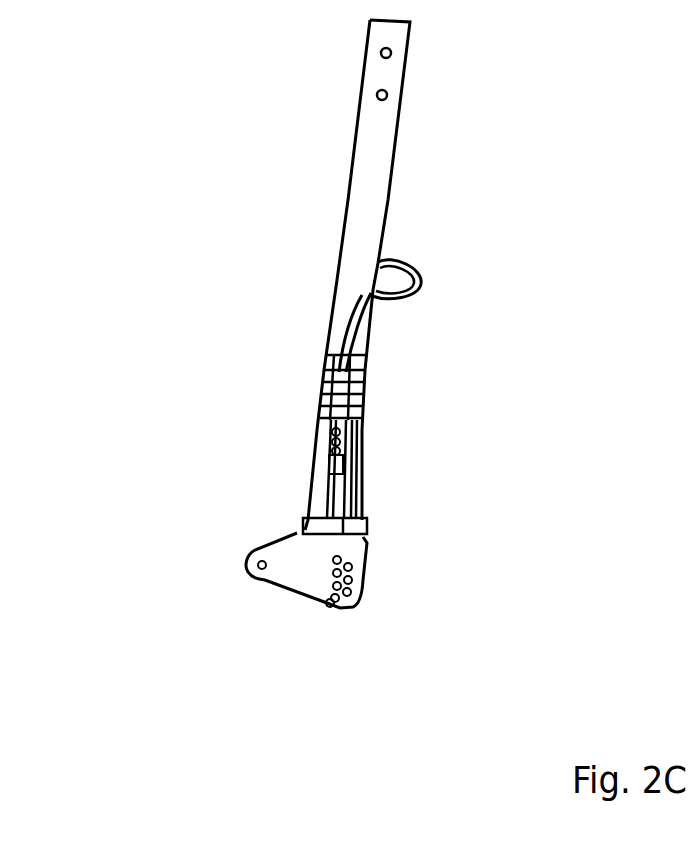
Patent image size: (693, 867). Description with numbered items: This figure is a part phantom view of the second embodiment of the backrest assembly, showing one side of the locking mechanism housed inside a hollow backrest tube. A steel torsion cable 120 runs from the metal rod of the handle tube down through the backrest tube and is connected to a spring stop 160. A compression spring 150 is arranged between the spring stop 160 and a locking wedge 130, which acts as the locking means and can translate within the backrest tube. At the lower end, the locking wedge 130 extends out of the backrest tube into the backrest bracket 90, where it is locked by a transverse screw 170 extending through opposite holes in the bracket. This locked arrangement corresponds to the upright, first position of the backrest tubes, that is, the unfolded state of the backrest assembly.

The backrest bracket 90 is at (300, 570).
The steel torsion cable 120 is at (367, 427).
The locking wedge 130 is at (217, 474).
The compression spring 150 is at (325, 401).
The spring stop 160 is at (230, 312).
The transverse screw 170 is at (473, 576).